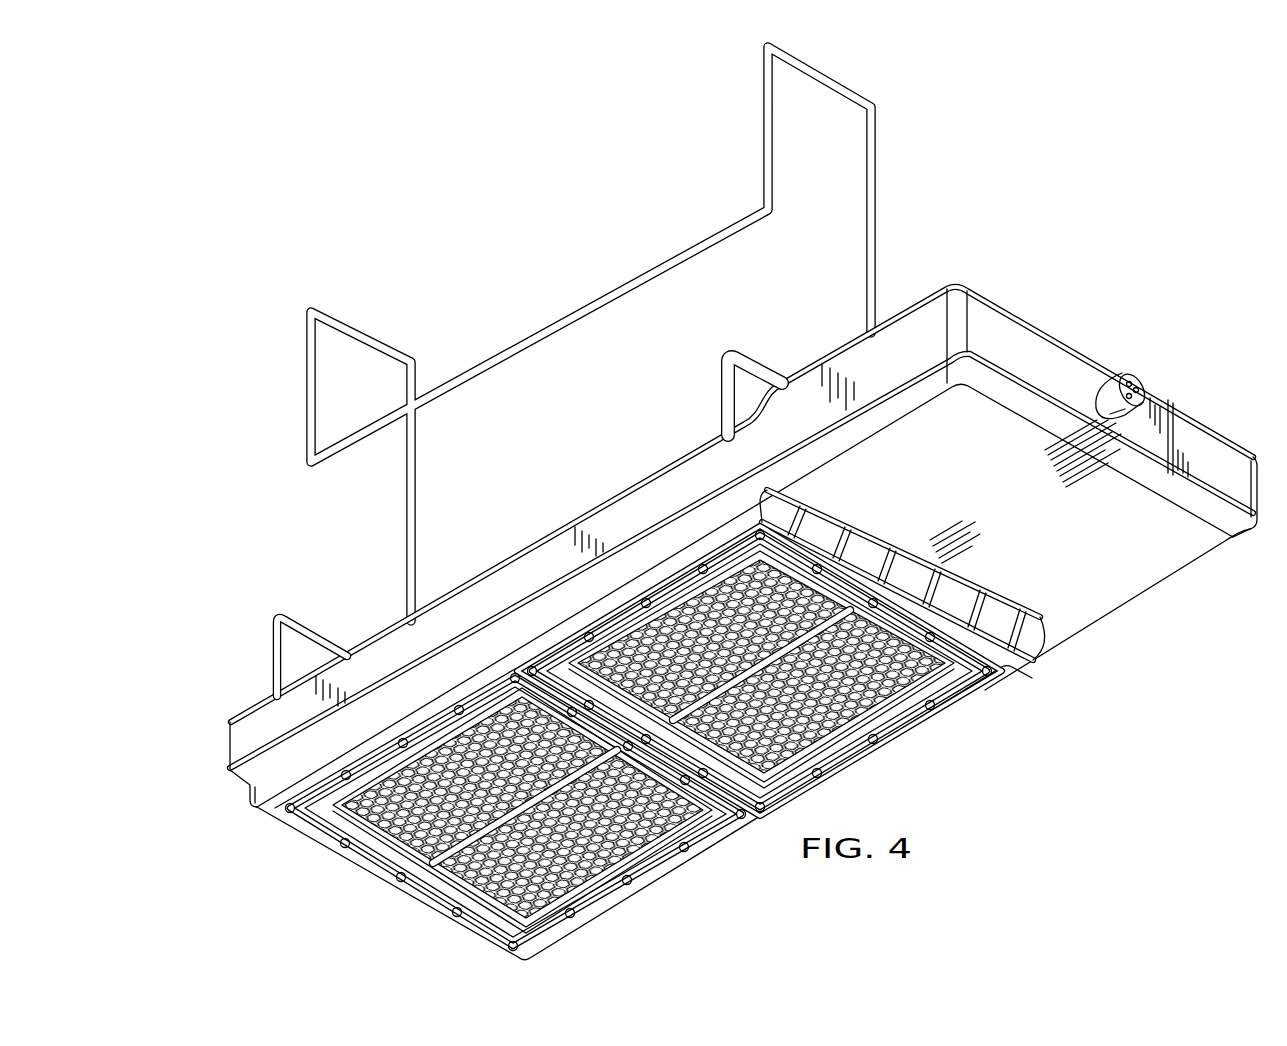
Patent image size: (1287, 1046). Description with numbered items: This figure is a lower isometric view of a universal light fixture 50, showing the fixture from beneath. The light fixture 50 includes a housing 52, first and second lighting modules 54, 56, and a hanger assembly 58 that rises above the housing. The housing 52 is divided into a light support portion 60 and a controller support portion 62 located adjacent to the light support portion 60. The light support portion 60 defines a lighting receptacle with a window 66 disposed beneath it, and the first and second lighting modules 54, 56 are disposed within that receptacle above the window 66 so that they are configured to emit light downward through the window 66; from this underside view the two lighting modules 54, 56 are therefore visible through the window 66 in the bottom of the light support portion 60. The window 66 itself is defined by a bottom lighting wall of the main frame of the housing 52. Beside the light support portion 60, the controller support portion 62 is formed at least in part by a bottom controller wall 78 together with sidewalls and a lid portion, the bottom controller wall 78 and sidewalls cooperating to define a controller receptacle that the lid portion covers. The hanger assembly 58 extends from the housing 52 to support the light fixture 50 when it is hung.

The universal light fixture 50 is at (702, 502).
The housing 52 is at (1020, 300).
The first lighting module 54 is at (939, 711).
The second lighting module 56 is at (650, 888).
The hanger assembly 58 is at (880, 97).
The light support portion 60 is at (214, 757).
The controller support portion 62 is at (1082, 338).
The window 66 is at (597, 910).
The bottom controller wall 78 is at (1147, 582).